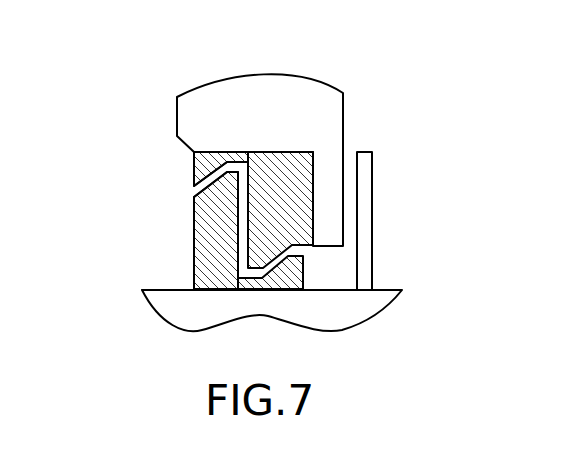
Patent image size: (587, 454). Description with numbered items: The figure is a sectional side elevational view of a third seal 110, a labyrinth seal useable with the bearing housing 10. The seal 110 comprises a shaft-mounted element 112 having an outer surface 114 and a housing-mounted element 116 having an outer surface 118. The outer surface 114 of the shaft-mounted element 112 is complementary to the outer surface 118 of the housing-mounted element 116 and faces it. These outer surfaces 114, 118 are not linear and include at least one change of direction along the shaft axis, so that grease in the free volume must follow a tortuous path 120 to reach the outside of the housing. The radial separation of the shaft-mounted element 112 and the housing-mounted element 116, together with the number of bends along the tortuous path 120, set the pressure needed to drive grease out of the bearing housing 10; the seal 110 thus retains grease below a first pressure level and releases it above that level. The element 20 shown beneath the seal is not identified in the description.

The bearing housing 10 is at (327, 91).
The base substrate 20 is at (368, 308).
The third seal 110 is at (253, 236).
The shaft-mounted element 112 is at (202, 263).
The outer surface 114 is at (205, 186).
The housing-mounted element 116 is at (305, 158).
The outer surface 118 is at (300, 246).
The tortuous path 120 is at (241, 265).